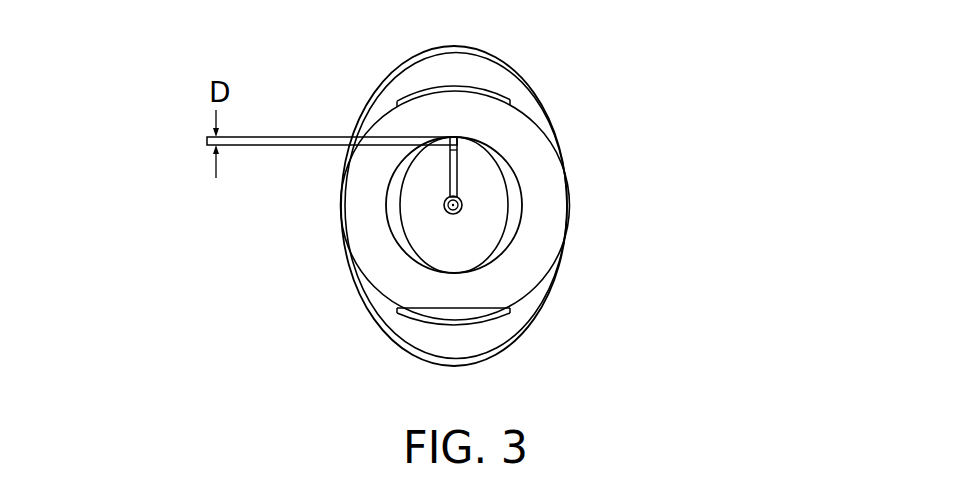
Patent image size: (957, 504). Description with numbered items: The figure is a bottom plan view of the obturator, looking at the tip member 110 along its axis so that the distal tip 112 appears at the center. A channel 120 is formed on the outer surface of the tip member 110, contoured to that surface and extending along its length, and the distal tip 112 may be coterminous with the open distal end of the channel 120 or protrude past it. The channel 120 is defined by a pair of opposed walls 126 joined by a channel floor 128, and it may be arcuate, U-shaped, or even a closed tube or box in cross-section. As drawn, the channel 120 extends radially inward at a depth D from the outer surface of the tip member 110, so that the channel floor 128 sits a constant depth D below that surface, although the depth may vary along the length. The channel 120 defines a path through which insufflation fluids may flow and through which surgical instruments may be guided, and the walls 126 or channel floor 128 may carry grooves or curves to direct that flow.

The tip member 110 is at (400, 117).
The distal tip 112 is at (462, 207).
The channel 120 is at (486, 129).
The opposed walls 126 is at (450, 168).
The channel floor 128 is at (452, 137).